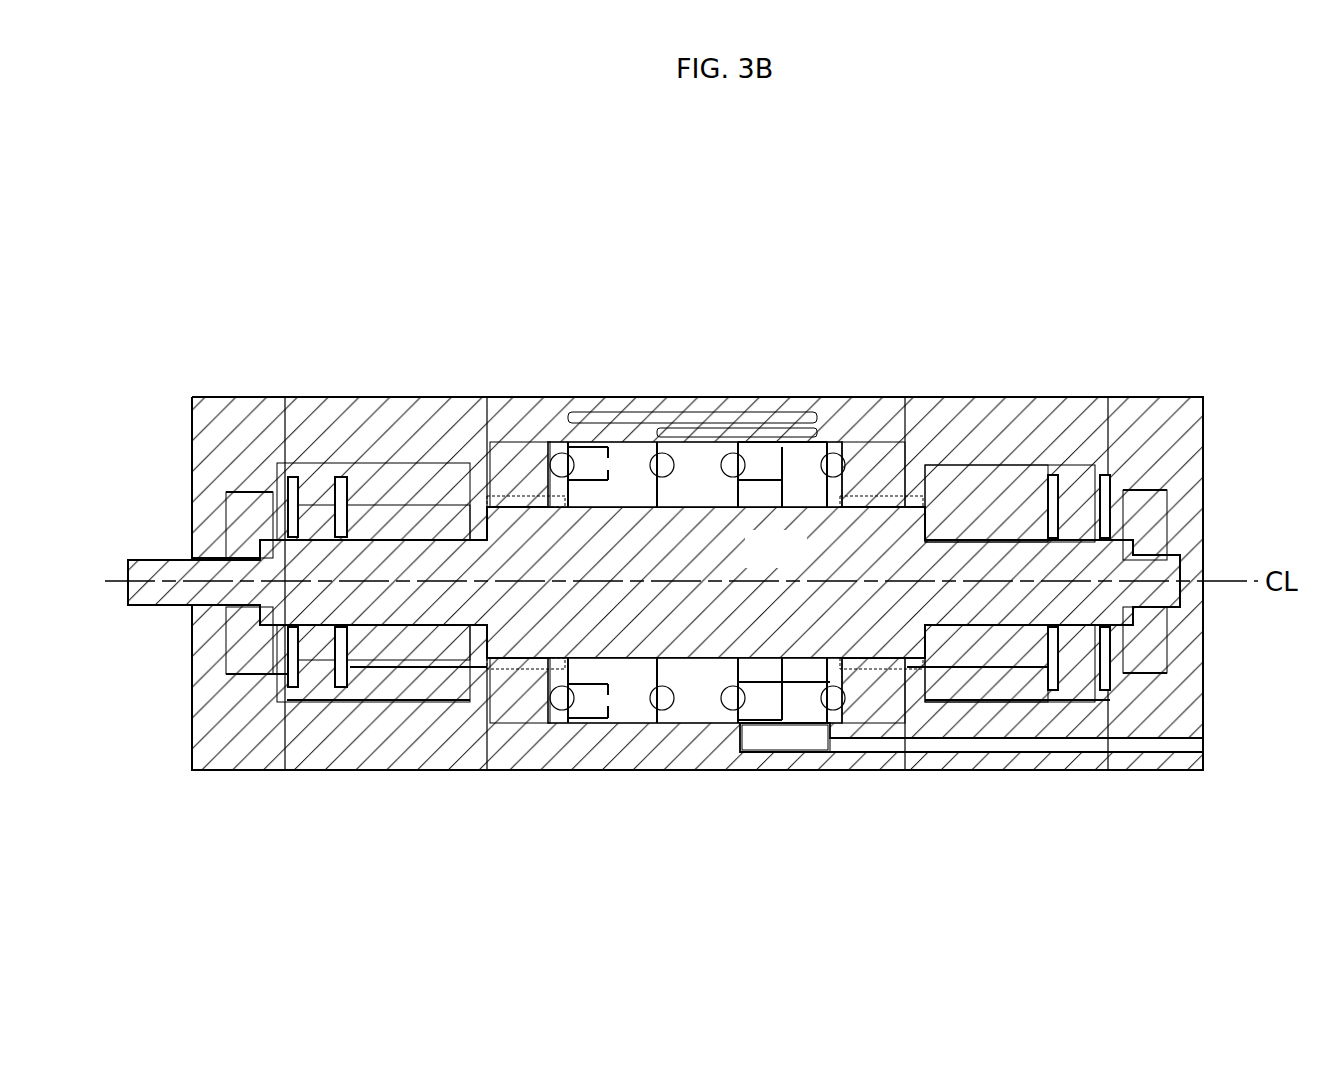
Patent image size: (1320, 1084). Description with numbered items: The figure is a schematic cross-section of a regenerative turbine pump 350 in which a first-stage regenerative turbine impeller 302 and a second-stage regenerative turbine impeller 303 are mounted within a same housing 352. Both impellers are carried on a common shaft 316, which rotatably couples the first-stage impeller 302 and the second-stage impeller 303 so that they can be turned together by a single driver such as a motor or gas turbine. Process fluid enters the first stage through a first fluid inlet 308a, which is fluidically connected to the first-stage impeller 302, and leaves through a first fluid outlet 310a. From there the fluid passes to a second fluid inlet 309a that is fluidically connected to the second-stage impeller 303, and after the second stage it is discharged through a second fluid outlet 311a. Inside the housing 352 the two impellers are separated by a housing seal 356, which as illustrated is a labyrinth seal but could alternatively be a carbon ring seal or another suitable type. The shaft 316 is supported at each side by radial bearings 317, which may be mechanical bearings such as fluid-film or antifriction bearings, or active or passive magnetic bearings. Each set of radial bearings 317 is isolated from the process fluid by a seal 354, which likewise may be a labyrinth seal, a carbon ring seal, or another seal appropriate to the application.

The regenerative turbine pump 350 is at (356, 268).
The first-stage regenerative turbine impeller 302 is at (615, 445).
The second-stage regenerative turbine impeller 303 is at (777, 723).
The first fluid inlet 308a is at (608, 373).
The first fluid outlet 310a is at (610, 434).
The second fluid inlet 309a is at (797, 740).
The second fluid outlet 311a is at (1016, 815).
The shaft 316 is at (805, 563).
The radial bearings 317 is at (977, 484).
The housing 352 is at (668, 771).
The seal 354 is at (866, 497).
The housing seal 356 is at (688, 495).